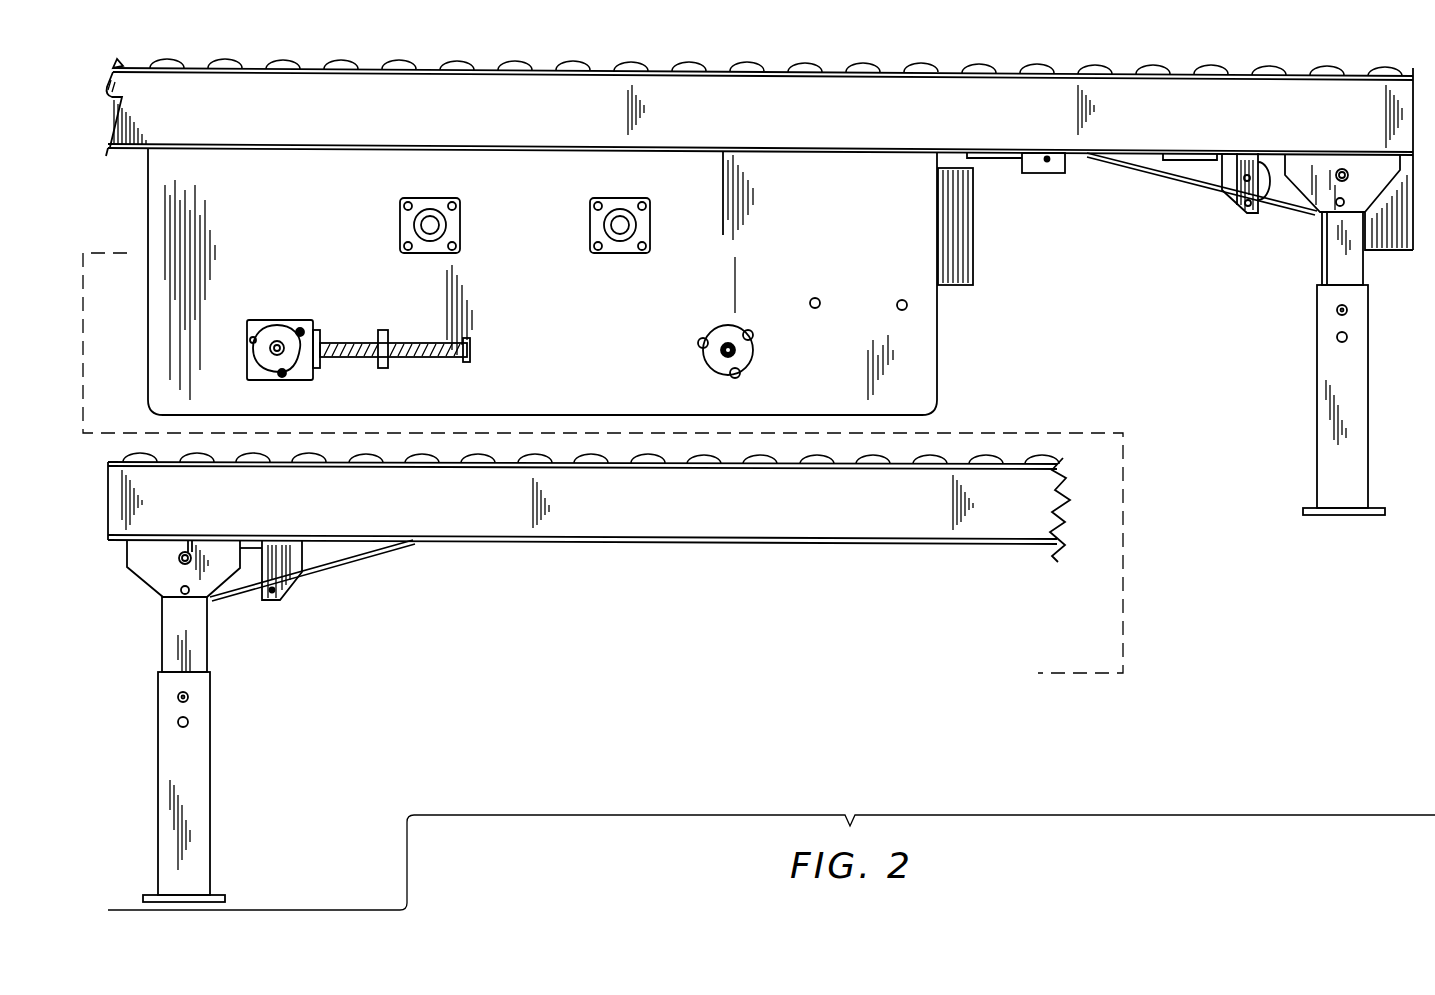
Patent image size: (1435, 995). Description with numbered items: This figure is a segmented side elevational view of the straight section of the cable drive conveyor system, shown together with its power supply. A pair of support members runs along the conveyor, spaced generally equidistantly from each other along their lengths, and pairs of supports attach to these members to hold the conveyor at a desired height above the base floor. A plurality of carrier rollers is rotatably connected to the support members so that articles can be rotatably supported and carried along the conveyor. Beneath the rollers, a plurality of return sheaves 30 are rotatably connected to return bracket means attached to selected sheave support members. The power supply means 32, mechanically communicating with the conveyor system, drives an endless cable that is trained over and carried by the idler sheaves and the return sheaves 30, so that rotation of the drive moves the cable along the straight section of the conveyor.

The return sheave 30 is at (1050, 168).
The power supply means 32 is at (660, 250).